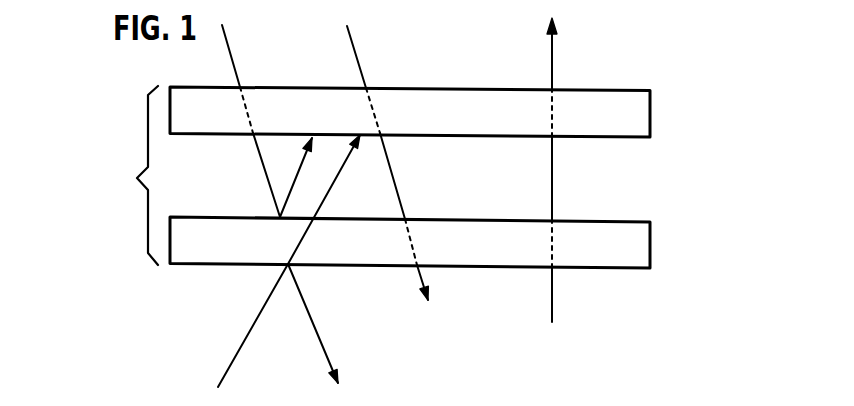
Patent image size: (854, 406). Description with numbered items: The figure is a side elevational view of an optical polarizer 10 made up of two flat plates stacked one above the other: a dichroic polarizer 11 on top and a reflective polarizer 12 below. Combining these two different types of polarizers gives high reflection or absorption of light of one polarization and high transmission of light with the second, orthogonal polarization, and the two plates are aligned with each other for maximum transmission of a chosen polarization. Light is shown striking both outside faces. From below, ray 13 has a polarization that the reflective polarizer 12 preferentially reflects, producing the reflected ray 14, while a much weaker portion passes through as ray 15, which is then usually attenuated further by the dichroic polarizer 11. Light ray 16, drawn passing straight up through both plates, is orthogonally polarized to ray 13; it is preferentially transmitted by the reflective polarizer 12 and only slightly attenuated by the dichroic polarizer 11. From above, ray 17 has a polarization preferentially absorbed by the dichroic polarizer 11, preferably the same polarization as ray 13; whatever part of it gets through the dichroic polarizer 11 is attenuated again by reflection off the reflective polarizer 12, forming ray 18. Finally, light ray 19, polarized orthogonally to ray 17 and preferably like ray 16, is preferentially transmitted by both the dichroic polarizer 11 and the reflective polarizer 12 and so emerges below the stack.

The optical polarizer 10 is at (133, 175).
The dichroic polarizer 11 is at (650, 117).
The reflective polarizer 12 is at (650, 249).
The ray 13 is at (254, 323).
The ray 14 is at (310, 315).
The ray 15 is at (325, 198).
The light ray 16 is at (552, 298).
The ray 17 is at (227, 42).
The ray 18 is at (290, 193).
The light ray 19 is at (352, 40).